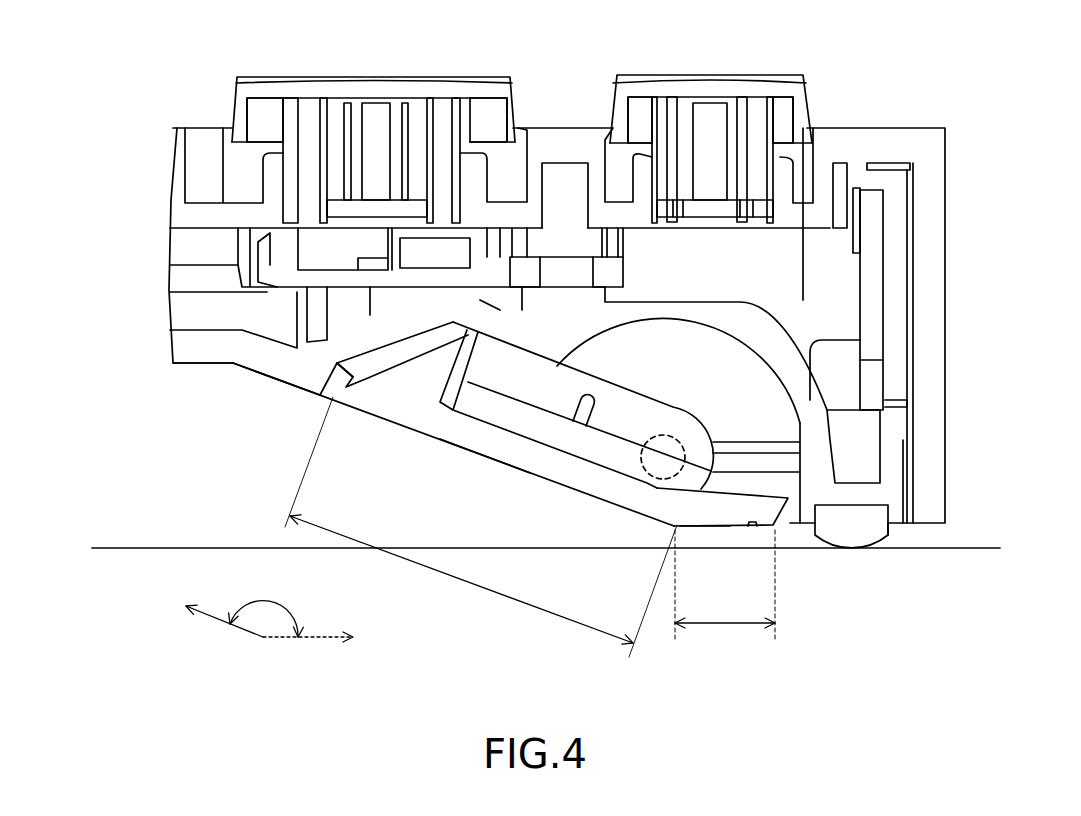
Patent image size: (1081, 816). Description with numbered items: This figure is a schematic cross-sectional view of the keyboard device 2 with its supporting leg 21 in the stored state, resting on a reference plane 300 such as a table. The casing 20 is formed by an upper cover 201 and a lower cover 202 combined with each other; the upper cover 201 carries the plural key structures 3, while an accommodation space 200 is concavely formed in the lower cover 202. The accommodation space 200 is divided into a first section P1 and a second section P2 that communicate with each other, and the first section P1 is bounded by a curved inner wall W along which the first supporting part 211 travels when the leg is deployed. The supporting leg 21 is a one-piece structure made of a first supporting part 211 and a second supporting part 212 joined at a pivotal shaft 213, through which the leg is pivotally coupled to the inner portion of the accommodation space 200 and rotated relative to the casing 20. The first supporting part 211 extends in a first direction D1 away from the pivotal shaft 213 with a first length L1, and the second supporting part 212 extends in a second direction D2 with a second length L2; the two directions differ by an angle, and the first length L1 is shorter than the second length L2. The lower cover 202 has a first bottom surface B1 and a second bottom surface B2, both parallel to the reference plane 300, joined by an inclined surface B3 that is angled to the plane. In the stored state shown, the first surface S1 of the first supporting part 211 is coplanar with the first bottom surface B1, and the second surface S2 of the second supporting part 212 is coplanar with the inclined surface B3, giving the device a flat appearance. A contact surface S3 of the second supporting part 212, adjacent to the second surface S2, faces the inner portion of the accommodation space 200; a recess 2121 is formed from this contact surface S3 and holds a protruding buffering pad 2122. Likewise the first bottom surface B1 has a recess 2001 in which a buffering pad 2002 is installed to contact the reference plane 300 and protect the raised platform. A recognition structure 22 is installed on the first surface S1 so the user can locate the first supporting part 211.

The keyboard device 2 is at (892, 96).
The key structure 3 is at (275, 87).
The casing 20 is at (1018, 297).
The accommodation space 200 is at (72, 73).
The upper cover 201 is at (927, 340).
The lower cover 202 is at (892, 463).
The recess 2001 is at (890, 512).
The buffering pad 2002 is at (862, 532).
The supporting leg 21 is at (72, 163).
The first supporting part 211 is at (780, 525).
The second supporting part 212 is at (567, 470).
The pivotal shaft 213 is at (640, 460).
The recess 2121 is at (482, 456).
The buffering pad 2122 is at (410, 372).
The recognition structure 22 is at (752, 530).
The reference plane 300 is at (150, 545).
The first section P1 is at (807, 523).
The second section P2 is at (562, 360).
The first surface S1 is at (703, 530).
The second surface S2 is at (481, 460).
The contact surface S3 is at (346, 378).
The first bottom surface B1 is at (897, 525).
The second bottom surface B2 is at (200, 366).
The inclined surface B3 is at (279, 382).
The curved inner wall W is at (758, 363).
The first length L1 is at (725, 592).
The second length L2 is at (481, 527).
The first direction D1 is at (327, 637).
The second direction D2 is at (204, 615).